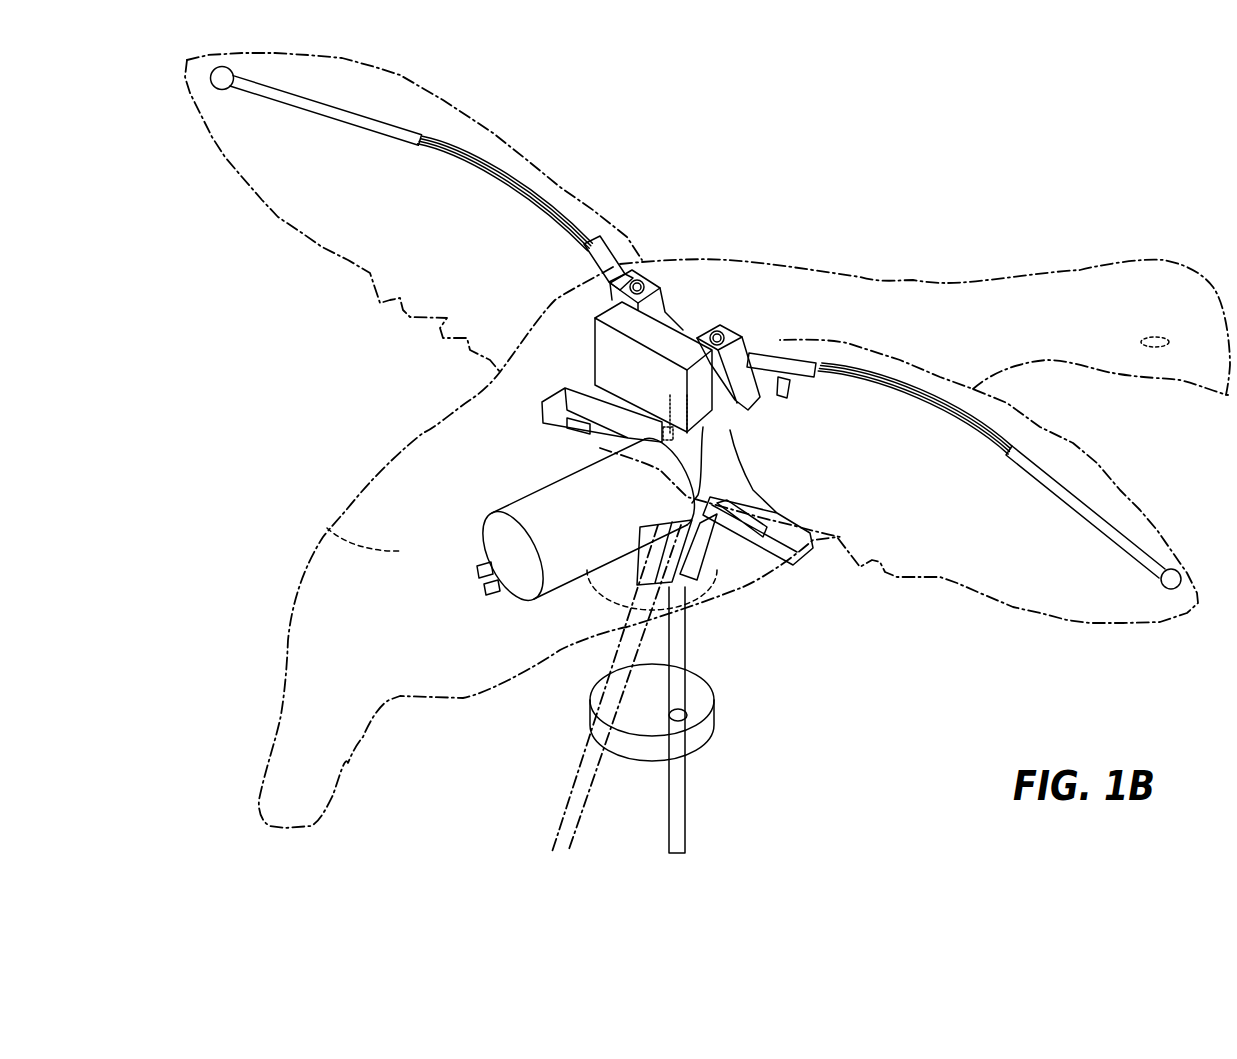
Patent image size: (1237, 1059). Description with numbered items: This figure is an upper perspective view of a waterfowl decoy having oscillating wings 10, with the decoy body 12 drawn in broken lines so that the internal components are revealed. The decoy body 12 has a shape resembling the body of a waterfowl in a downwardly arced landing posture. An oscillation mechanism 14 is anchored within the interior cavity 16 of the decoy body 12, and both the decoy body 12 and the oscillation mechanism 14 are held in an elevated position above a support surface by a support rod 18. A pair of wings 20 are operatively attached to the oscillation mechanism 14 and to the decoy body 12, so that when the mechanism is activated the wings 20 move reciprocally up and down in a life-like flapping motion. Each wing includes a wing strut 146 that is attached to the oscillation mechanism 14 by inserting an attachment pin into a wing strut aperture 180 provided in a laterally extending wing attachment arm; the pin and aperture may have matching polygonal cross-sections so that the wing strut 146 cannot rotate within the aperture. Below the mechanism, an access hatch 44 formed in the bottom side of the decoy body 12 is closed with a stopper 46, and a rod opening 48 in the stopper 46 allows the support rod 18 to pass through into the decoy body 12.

The waterfowl decoy having oscillating wings 10 is at (650, 127).
The decoy body 12 is at (890, 283).
The oscillation mechanism 14 is at (508, 457).
The interior cavity 16 is at (327, 528).
The support rod 18 is at (690, 800).
The wings 20 is at (315, 218).
The access hatch 44 is at (705, 598).
The stopper 46 is at (705, 752).
The rod opening 48 is at (688, 708).
The wing strut 146 is at (505, 178).
The wing strut aperture 180 is at (640, 268).